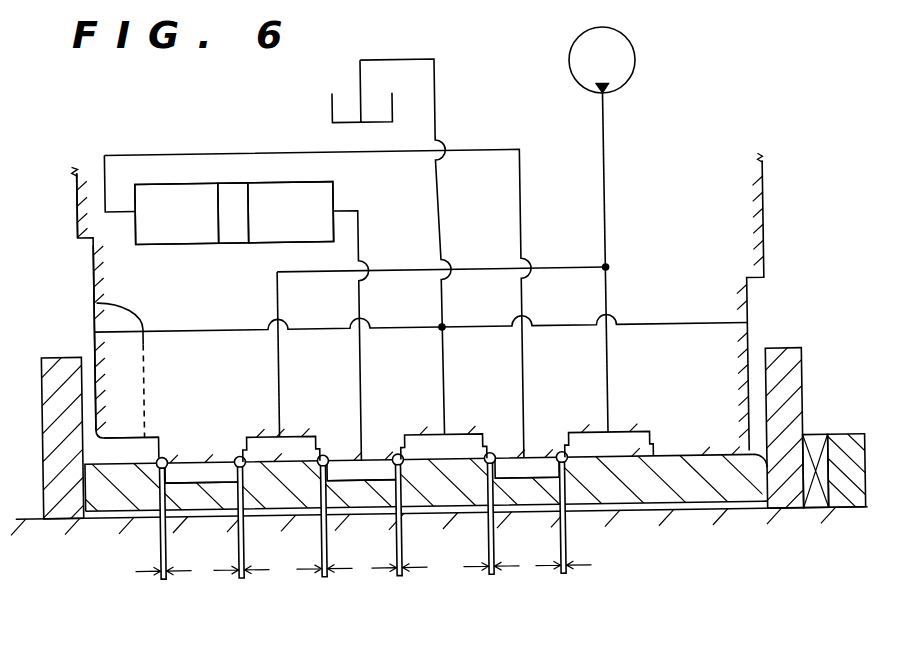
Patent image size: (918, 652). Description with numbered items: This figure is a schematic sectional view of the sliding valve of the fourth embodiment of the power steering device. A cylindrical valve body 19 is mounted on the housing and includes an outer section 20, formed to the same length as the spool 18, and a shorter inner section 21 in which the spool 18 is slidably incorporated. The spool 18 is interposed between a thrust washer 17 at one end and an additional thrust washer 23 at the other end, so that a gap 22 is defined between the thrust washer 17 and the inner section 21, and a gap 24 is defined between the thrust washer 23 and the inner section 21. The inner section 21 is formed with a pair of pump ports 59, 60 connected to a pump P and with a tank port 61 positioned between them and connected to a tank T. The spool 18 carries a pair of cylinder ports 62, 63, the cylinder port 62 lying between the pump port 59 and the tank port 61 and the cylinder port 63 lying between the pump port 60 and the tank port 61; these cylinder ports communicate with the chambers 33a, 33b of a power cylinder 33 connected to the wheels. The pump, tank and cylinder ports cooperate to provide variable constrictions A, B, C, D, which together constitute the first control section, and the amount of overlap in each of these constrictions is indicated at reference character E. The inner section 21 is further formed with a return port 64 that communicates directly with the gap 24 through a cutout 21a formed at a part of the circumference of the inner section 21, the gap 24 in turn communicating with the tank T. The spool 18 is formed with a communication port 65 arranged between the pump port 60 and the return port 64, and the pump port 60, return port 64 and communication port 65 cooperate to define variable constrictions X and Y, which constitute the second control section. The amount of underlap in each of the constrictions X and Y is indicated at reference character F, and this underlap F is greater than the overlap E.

The thrust washer 17 is at (793, 352).
The spool 18 is at (686, 505).
The valve body 19 is at (43, 218).
The outer section 20 is at (79, 222).
The inner section 21 is at (107, 270).
The cutout 21a is at (147, 361).
The gap 22 is at (757, 358).
The additional thrust washer 23 is at (52, 357).
The gap 24 is at (87, 359).
The power cylinder 33 is at (219, 173).
The chamber 33a is at (172, 192).
The chamber 33b is at (289, 192).
The pump port 59 is at (624, 434).
The pump port 60 is at (302, 434).
The tank port 61 is at (461, 434).
The cylinder port 62 is at (536, 479).
The cylinder port 63 is at (364, 479).
The return port 64 is at (125, 433).
The communication port 65 is at (207, 479).
The variable constriction A is at (564, 468).
The variable constriction B is at (319, 468).
The variable constriction C is at (486, 468).
The variable constriction D is at (400, 468).
The variable constriction X is at (243, 468).
The variable constriction Y is at (158, 467).
The amount of overlap E is at (444, 583).
The amount of underlap F is at (202, 587).
The pump P is at (638, 68).
The tank T is at (393, 108).